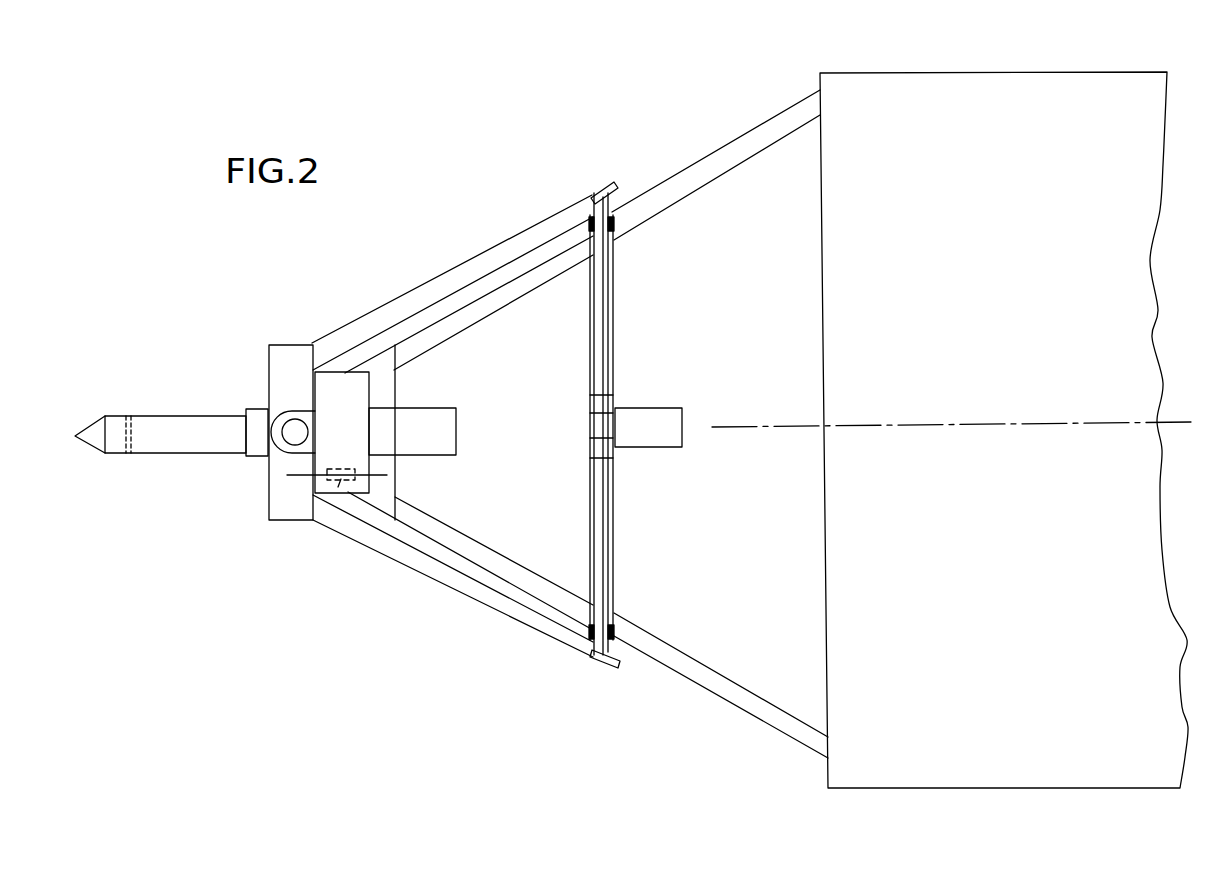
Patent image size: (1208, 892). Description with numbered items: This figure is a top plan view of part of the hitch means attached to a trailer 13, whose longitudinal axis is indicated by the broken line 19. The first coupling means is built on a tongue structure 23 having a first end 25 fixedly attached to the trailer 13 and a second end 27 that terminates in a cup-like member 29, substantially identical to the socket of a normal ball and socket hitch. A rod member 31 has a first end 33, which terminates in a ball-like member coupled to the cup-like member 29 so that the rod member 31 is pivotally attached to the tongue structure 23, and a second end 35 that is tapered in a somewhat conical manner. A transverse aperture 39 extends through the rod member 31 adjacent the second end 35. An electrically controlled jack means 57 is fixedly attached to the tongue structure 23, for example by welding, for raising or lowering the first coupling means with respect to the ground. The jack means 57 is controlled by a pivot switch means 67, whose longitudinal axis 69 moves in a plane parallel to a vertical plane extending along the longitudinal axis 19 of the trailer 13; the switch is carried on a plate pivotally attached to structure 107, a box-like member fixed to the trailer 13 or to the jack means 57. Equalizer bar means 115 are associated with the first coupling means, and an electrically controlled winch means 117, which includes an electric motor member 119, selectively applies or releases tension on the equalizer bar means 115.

The trailer 13 is at (1000, 90).
The longitudinal axis 19 is at (1180, 422).
The tongue structure 23 is at (703, 170).
The first end 25 is at (800, 115).
The second end 27 is at (400, 345).
The cup-like member 29 is at (293, 437).
The rod member 31 is at (147, 447).
The first end 33 is at (243, 413).
The second end 35 is at (103, 440).
The transverse aperture 39 is at (138, 412).
The jack means 57 is at (469, 434).
The pivot switch means 67 is at (338, 482).
The longitudinal axis 69 is at (347, 552).
The structure 107 is at (350, 375).
The equalizer bar means 115 is at (482, 258).
The winch means 117 is at (653, 377).
The electric motor member 119 is at (655, 435).